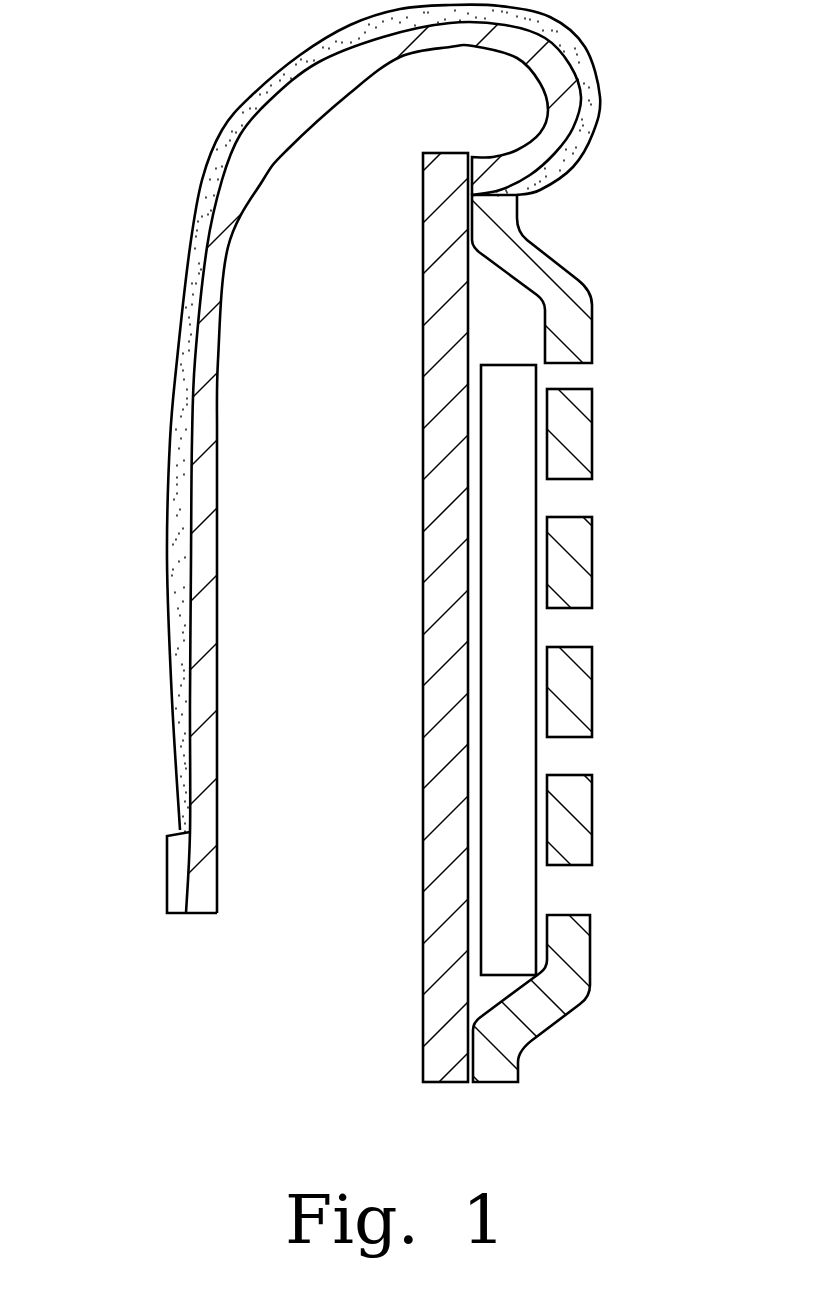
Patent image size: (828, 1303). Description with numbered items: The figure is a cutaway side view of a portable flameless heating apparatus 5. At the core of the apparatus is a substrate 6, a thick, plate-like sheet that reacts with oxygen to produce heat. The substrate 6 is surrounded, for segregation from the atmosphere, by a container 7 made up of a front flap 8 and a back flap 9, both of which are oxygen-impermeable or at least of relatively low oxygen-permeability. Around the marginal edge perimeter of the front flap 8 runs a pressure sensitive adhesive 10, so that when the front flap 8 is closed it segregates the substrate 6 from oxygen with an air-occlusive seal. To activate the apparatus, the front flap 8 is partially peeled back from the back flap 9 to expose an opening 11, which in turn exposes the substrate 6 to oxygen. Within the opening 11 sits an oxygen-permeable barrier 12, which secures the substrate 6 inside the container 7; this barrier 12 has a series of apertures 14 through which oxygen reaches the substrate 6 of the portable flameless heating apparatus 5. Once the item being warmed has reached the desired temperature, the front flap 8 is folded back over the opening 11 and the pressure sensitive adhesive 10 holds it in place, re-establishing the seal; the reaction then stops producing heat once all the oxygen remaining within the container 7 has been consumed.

The portable flameless heating apparatus 5 is at (133, 249).
The substrate 6 is at (517, 499).
The container 7 is at (429, 967).
The front flap 8 is at (278, 126).
The back flap 9 is at (428, 248).
The pressure sensitive adhesive 10 is at (582, 66).
The opening 11 is at (636, 352).
The oxygen-permeable barrier 12 is at (578, 692).
The apertures 14 is at (569, 885).